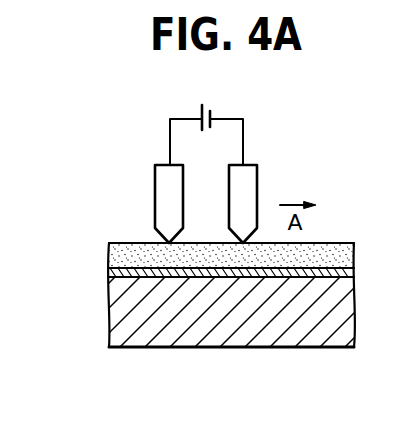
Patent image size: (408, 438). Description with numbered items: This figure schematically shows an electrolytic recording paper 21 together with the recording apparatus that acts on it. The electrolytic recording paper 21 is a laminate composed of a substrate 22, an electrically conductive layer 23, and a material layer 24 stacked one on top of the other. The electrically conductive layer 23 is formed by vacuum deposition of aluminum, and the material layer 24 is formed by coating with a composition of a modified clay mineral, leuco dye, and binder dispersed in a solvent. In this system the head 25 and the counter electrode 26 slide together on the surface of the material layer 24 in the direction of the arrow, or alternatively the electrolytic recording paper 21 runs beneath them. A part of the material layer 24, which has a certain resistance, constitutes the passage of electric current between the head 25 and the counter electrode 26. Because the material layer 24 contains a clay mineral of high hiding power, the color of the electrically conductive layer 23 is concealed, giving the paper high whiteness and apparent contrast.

The electrolytic recording paper 21 is at (218, 294).
The substrate 22 is at (226, 312).
The electrically conductive layer 23 is at (116, 273).
The material layer 24 is at (118, 253).
The head 25 is at (160, 195).
The counter electrode 26 is at (255, 188).